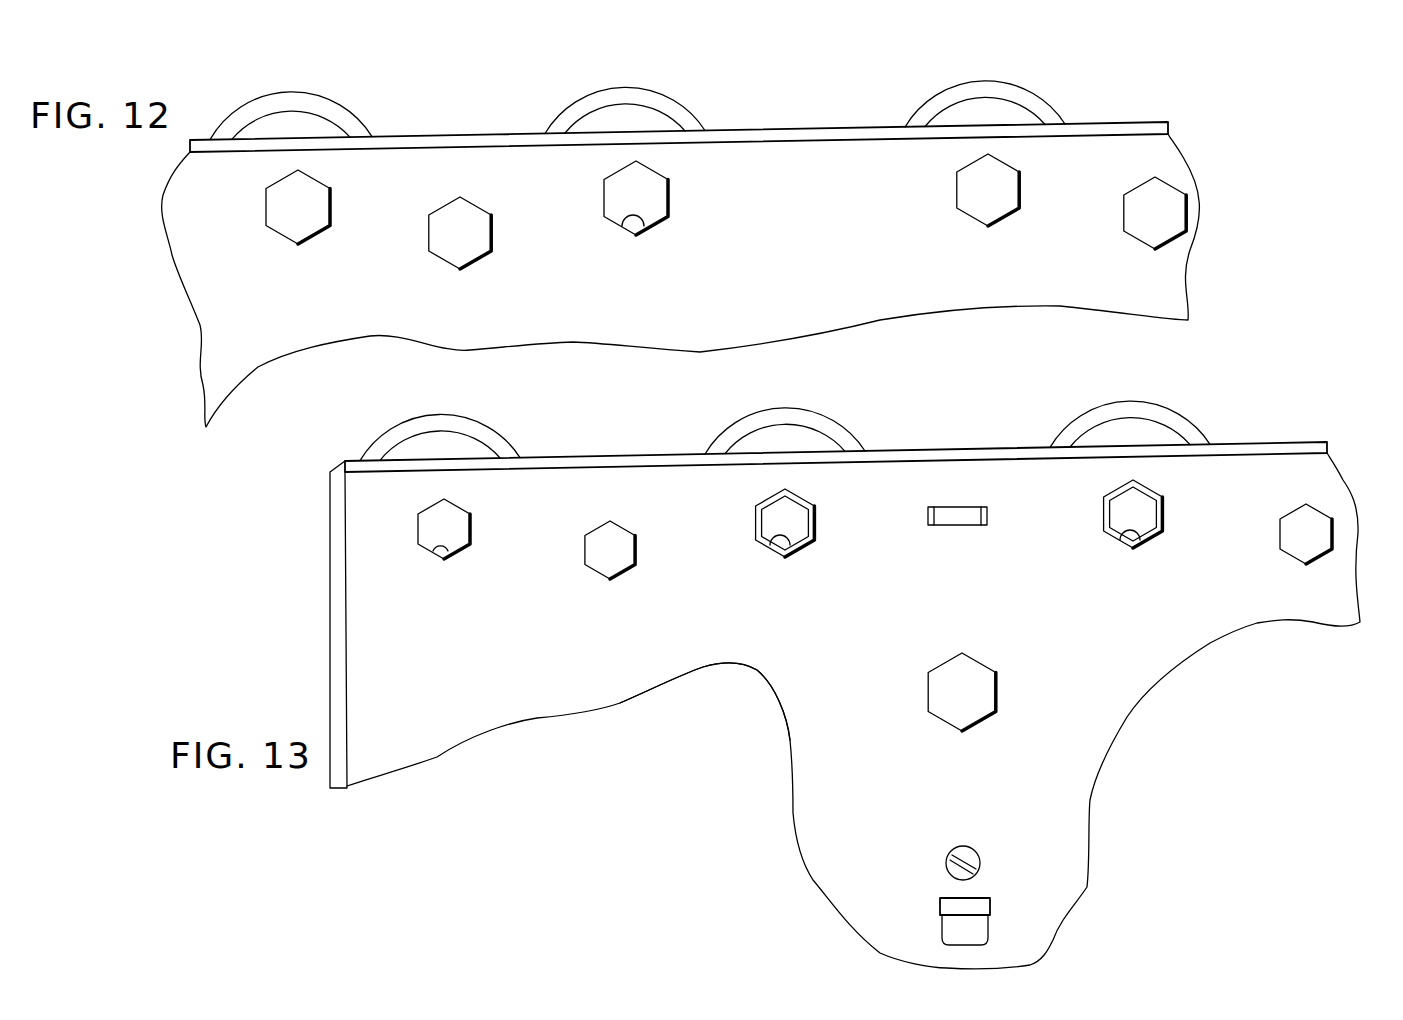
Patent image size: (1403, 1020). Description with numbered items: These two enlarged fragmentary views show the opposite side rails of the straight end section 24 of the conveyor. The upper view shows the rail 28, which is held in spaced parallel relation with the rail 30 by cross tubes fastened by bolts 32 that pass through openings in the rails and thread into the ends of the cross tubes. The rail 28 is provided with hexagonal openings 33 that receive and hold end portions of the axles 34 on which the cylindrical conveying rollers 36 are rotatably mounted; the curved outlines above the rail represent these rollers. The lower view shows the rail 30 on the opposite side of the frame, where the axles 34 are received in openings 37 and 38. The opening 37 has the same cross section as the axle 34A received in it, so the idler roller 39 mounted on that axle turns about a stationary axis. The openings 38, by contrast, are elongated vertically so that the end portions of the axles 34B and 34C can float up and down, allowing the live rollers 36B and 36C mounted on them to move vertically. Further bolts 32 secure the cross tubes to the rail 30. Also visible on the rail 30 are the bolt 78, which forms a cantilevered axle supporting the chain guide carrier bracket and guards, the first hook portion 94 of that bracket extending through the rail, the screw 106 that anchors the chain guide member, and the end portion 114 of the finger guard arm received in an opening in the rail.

In FIG. 13, the straight end section 24 is at (536, 770).
In FIG. 12, the rail 28 is at (1120, 288).
In FIG. 13, the rail 30 is at (650, 665).
In FIG. 12, the bolt 32 is at (468, 243).
In FIG. 13, the bolt 32 is at (604, 562).
In FIG. 12, the hexagonal opening 33 is at (642, 232).
In FIG. 12, the axle 34 is at (600, 201).
In FIG. 13, the axle 34A is at (465, 537).
In FIG. 13, the axle 34B is at (795, 523).
In FIG. 13, the axle 34C is at (1140, 517).
In FIG. 12, the cylindrical conveying roller 36 is at (660, 124).
In FIG. 13, the live roller 36B is at (848, 438).
In FIG. 13, the live roller 36C is at (1200, 434).
In FIG. 13, the opening 37 is at (440, 558).
In FIG. 13, the opening 38 is at (793, 558).
In FIG. 13, the idler roller 39 is at (512, 452).
In FIG. 13, the bolt 78 is at (978, 705).
In FIG. 13, the first hook portion 94 is at (970, 935).
In FIG. 13, the screw 106 is at (975, 855).
In FIG. 13, the end portion 114 is at (965, 515).